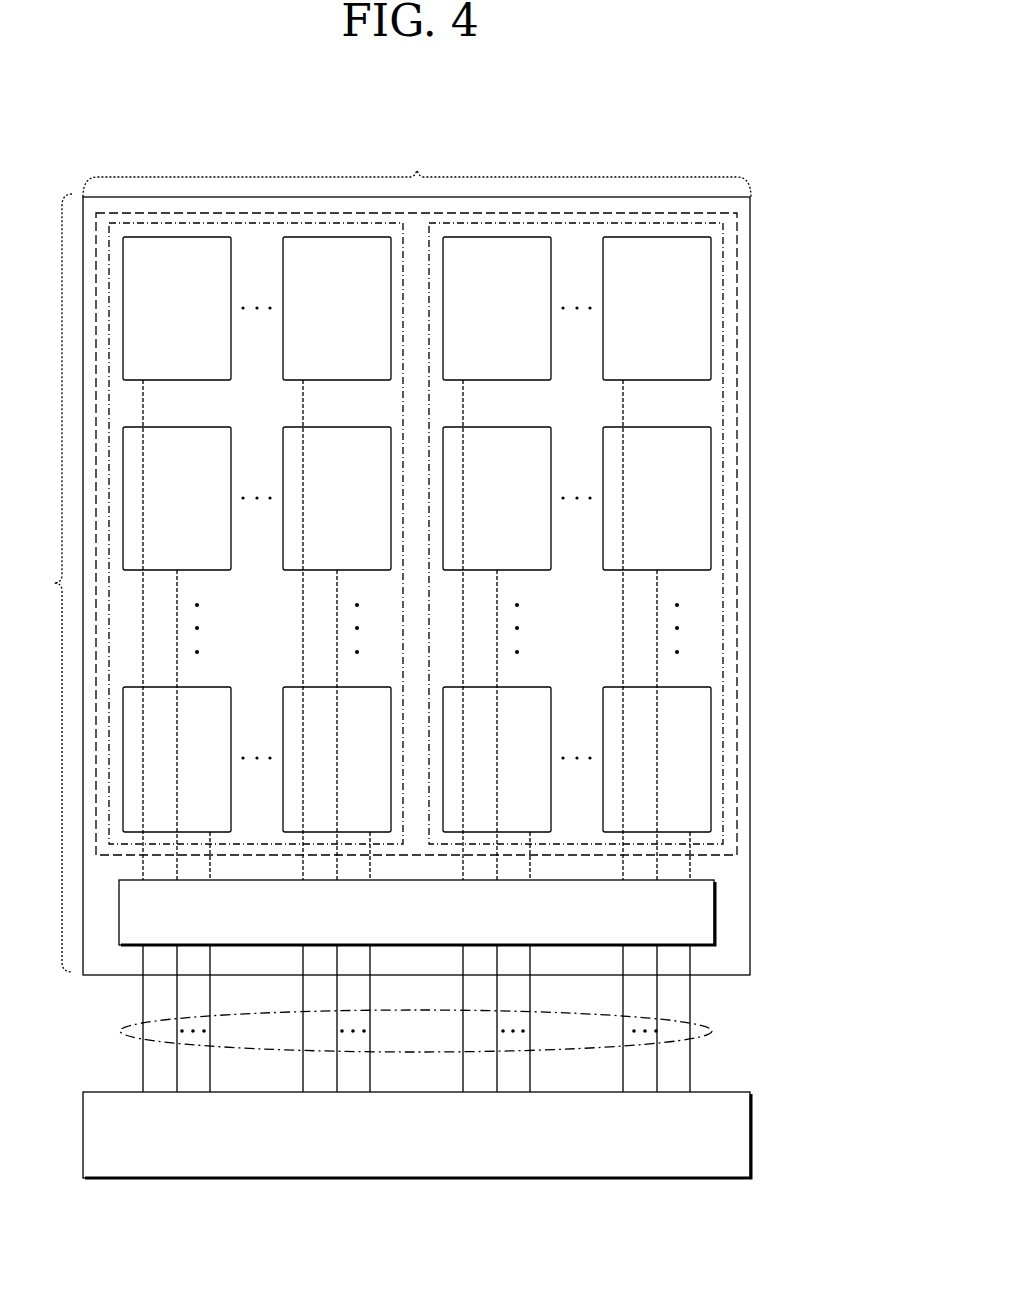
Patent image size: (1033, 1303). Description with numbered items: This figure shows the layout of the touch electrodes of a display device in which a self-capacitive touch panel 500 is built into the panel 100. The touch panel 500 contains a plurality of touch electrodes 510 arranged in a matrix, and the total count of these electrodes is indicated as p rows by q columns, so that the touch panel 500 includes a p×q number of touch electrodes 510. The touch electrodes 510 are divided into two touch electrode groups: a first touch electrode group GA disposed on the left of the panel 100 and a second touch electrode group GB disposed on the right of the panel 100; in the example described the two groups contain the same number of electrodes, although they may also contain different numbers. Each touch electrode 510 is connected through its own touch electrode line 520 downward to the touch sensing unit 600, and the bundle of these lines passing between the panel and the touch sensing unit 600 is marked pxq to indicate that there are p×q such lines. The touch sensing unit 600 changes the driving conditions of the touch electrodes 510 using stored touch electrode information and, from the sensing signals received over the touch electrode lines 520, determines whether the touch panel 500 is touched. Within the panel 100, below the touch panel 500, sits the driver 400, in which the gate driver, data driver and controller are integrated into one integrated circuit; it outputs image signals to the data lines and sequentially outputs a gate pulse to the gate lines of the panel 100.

The panel 100 is at (751, 212).
The touch panel 500 is at (737, 305).
The touch electrode 510 is at (710, 500).
The touch electrode line 520 is at (657, 638).
The driver 400 is at (417, 912).
The touch sensing unit 600 is at (417, 1135).
The first touch electrode group GA is at (203, 223).
The second touch electrode group GB is at (619, 222).
The number of touch electrode rows p is at (51, 583).
The number of touch electrode columns q is at (417, 166).
The p×q number of touch electrode lines pxq is at (712, 1031).